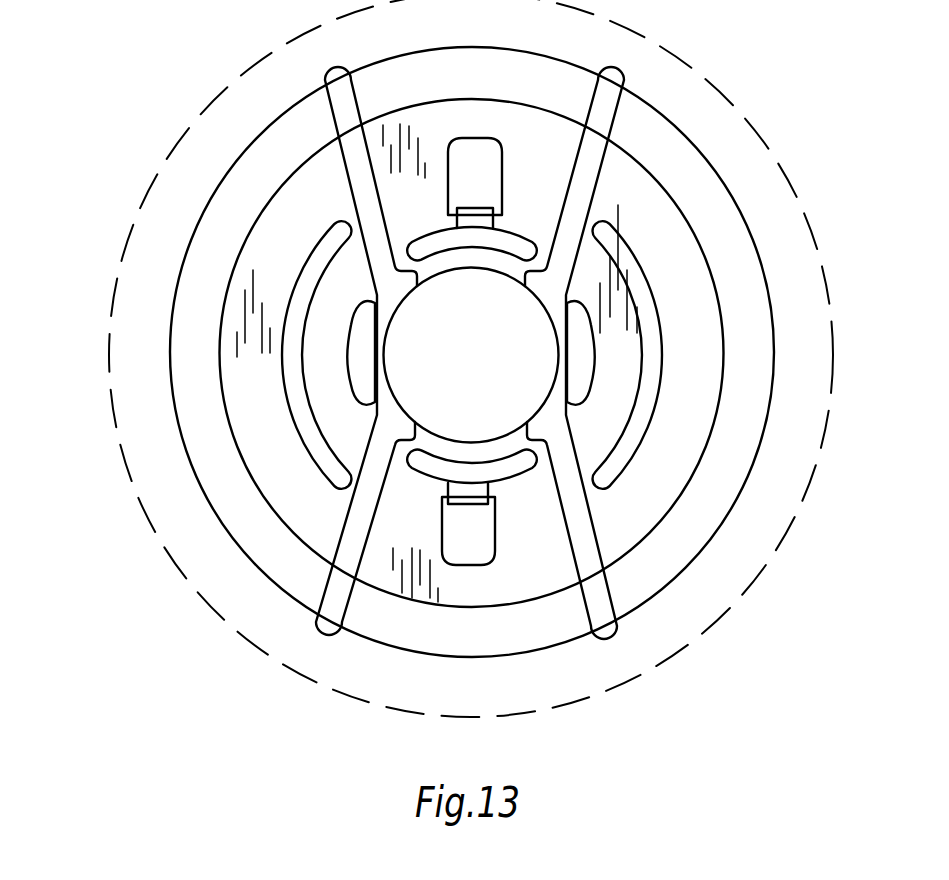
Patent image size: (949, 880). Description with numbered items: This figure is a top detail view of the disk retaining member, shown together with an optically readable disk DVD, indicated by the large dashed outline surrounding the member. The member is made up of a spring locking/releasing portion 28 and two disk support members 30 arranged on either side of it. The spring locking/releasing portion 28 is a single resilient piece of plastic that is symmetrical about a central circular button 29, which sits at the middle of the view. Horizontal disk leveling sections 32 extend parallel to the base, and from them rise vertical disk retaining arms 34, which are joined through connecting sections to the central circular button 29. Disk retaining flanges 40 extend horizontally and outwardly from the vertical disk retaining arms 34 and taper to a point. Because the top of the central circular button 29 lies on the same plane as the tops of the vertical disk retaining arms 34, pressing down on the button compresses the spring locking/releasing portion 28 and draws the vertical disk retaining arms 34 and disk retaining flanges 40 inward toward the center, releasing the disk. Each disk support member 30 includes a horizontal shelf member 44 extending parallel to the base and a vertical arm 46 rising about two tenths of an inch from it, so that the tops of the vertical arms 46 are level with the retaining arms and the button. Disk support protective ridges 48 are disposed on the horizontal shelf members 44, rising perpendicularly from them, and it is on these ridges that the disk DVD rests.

The spring locking/releasing portion 28 is at (492, 633).
The central circular button 29 is at (482, 370).
The disk support member 30 is at (240, 520).
The horizontal disk leveling section 32 is at (529, 594).
The vertical disk retaining arm 34 is at (428, 465).
The disk retaining flange 40 is at (481, 489).
The horizontal shelf member 44 is at (288, 456).
The vertical arm 46 is at (362, 374).
The disk support protective ridge 48 is at (313, 272).
The optically readable disk DVD is at (822, 447).